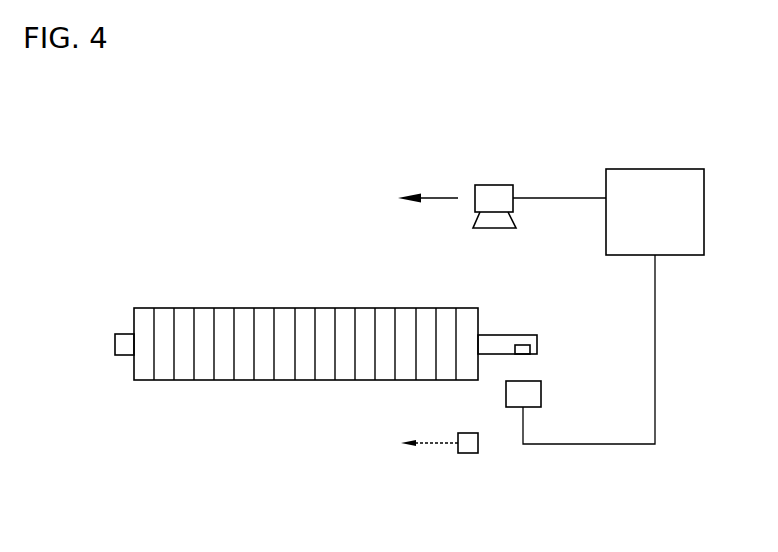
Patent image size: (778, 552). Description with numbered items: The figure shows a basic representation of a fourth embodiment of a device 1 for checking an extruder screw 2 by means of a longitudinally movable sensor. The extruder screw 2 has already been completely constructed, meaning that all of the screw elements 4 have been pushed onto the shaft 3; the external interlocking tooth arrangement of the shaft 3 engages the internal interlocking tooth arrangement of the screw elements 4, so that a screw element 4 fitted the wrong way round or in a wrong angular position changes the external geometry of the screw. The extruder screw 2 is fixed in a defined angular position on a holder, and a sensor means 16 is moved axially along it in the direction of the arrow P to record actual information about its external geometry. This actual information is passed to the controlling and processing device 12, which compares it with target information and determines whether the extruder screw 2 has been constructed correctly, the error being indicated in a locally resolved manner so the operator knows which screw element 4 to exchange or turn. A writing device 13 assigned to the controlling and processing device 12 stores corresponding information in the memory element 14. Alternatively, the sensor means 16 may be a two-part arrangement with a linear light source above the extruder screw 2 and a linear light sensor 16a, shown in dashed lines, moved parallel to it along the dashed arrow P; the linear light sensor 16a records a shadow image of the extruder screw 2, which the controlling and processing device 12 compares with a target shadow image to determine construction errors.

The device 1 is at (378, 128).
The extruder screw 2 is at (232, 292).
The shaft 3 is at (124, 334).
The screw elements 4 is at (206, 380).
The controlling and processing device 12 is at (643, 169).
The writing device 13 is at (541, 393).
The memory element 14 is at (523, 345).
The sensor means 16 is at (498, 185).
The linear light sensor 16a is at (470, 453).
The arrow P is at (433, 197).